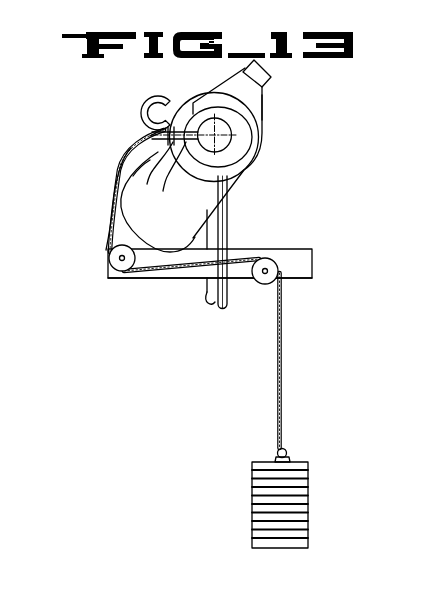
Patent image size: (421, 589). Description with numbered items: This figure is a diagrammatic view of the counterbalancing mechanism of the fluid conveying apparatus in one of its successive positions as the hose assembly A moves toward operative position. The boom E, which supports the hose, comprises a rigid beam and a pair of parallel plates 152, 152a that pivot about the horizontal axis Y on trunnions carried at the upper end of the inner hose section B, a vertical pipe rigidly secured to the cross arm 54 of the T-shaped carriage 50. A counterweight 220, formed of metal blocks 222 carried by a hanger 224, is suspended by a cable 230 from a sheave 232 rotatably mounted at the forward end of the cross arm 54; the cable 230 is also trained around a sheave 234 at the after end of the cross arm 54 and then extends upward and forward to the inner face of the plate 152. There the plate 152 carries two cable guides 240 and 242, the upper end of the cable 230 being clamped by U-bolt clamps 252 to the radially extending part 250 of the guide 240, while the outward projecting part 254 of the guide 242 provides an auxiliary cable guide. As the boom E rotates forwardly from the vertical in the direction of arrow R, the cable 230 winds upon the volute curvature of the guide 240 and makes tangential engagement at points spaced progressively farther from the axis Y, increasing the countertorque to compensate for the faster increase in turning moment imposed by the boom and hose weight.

The boom plate 152 is at (192, 231).
The boom plate 152a is at (186, 105).
The outward projecting part of guide 254 is at (143, 106).
The cable guide 242 is at (145, 128).
The cable guide 240 is at (150, 165).
The cable 230 is at (112, 215).
The sheave 234 is at (112, 257).
The sheave 232 is at (278, 280).
The T-shaped carriage 50 is at (304, 245).
The cross arm 54 is at (158, 276).
The inner hose section B is at (199, 306).
The boom E is at (280, 78).
The articulated hose assembly A is at (296, 106).
The horizontal axis Y is at (222, 131).
The radially extending part of guide 250 is at (238, 171).
The arrow of forward rotation R is at (190, 180).
The U-bolt clamps 252 is at (161, 178).
The hanger 224 is at (290, 455).
The counterweight 220 is at (322, 491).
The metal blocks 222 is at (260, 537).